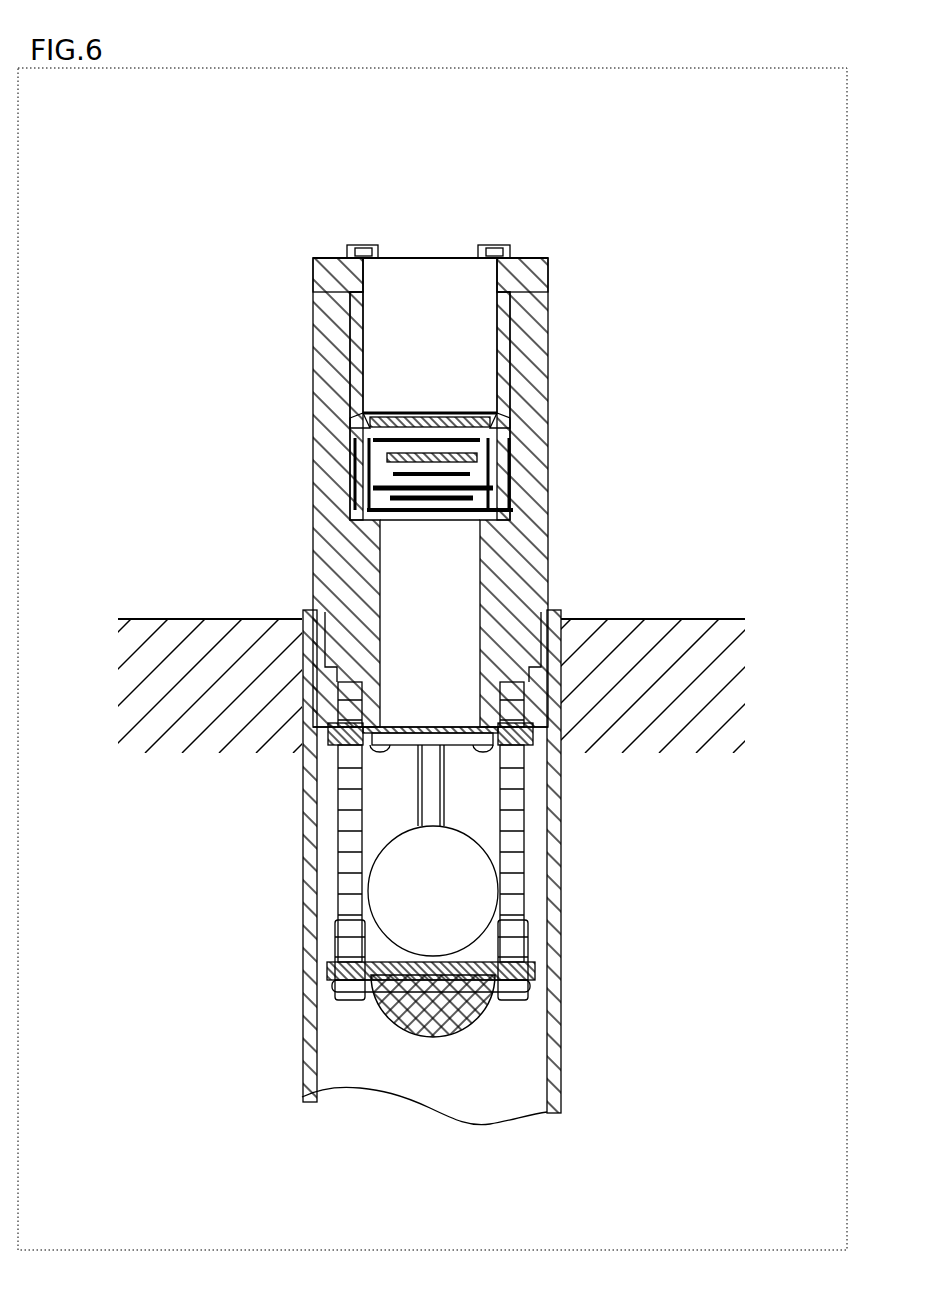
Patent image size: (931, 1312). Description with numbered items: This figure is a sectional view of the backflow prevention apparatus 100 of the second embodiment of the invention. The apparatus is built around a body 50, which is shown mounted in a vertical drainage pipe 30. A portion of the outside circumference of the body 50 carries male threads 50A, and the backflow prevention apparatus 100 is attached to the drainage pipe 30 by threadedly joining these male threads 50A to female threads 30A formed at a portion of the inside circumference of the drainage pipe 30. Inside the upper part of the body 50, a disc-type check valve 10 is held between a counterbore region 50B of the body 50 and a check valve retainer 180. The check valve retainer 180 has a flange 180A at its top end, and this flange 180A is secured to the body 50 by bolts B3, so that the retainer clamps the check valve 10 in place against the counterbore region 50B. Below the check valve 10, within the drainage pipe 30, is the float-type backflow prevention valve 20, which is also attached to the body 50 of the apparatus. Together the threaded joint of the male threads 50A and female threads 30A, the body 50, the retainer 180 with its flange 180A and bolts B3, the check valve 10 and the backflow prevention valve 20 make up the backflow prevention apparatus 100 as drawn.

The backflow prevention apparatus 100 is at (605, 245).
The check valve retainer 180 is at (547, 385).
The flange 180A is at (323, 257).
The bolts B3 is at (477, 243).
The check valve 10 is at (410, 398).
The body 50 is at (318, 428).
The male threads 50A is at (310, 608).
The counterbore region 50B is at (352, 522).
The drainage pipe 30 is at (562, 835).
The female threads 30A is at (547, 593).
The backflow prevention valve 20 is at (407, 1053).